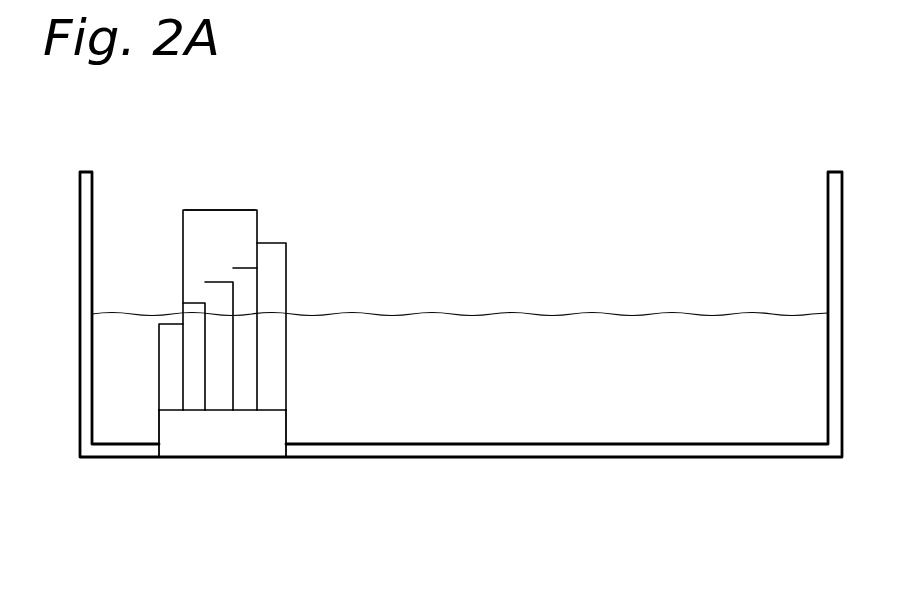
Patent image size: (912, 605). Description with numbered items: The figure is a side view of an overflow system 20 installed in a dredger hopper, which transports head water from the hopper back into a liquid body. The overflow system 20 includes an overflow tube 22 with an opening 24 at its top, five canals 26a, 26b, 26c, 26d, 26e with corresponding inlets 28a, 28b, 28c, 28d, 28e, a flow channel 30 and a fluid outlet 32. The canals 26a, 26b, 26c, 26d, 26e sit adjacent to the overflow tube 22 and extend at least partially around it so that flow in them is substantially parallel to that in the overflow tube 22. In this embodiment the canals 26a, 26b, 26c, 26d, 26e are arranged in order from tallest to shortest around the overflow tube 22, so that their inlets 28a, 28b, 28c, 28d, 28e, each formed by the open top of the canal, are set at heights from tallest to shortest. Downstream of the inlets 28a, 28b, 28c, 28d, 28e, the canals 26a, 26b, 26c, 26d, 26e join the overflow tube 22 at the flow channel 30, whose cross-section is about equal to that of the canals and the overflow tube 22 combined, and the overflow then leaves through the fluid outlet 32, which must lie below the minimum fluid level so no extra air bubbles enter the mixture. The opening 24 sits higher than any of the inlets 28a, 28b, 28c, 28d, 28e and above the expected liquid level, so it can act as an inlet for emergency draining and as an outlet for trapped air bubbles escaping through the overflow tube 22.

The overflow system 20 is at (163, 132).
The overflow tube 22 is at (224, 227).
The opening 24 is at (237, 205).
The canal 26a is at (273, 368).
The canal 26b is at (243, 350).
The canal 26c is at (218, 354).
The canal 26d is at (196, 376).
The canal 26e is at (170, 396).
The inlet 28a is at (273, 239).
The inlet 28b is at (247, 262).
The inlet 28c is at (217, 277).
The inlet 28d is at (193, 298).
The inlet 28e is at (167, 312).
The flow channel 30 is at (272, 423).
The fluid outlet 32 is at (229, 472).